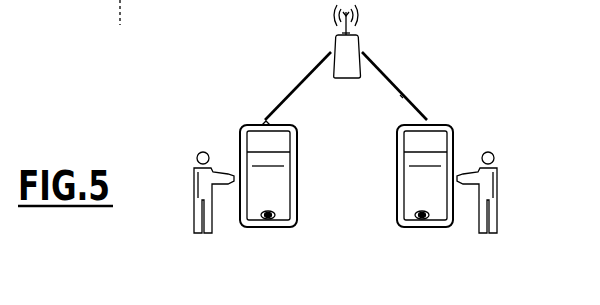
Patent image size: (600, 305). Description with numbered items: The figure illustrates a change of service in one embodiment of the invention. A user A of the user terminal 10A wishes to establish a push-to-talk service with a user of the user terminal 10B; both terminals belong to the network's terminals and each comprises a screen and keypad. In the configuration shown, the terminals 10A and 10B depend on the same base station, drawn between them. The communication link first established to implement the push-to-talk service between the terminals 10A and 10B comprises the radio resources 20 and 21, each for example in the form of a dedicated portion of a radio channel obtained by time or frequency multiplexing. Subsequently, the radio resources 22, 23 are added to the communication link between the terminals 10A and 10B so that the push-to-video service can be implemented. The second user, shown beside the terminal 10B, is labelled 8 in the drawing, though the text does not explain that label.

The user terminal 10A is at (268, 228).
The user terminal 10B is at (422, 228).
The radio resource 20 is at (292, 90).
The radio resource 21 is at (388, 78).
The radio resource 22 is at (284, 118).
The radio resource 23 is at (404, 97).
The user A is at (194, 218).
The user B 8 is at (497, 218).